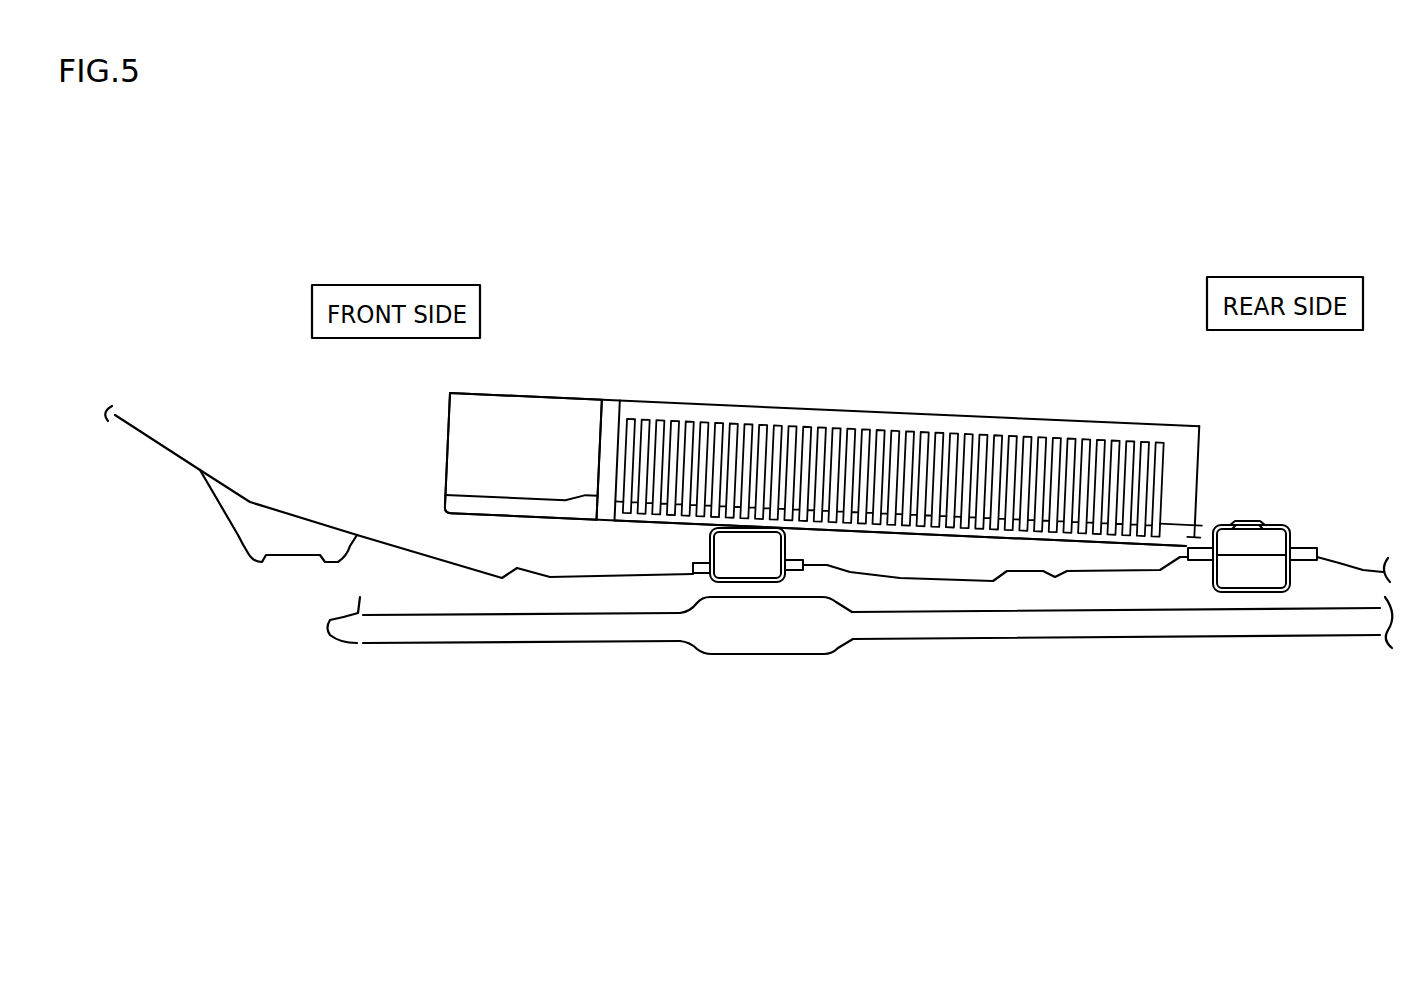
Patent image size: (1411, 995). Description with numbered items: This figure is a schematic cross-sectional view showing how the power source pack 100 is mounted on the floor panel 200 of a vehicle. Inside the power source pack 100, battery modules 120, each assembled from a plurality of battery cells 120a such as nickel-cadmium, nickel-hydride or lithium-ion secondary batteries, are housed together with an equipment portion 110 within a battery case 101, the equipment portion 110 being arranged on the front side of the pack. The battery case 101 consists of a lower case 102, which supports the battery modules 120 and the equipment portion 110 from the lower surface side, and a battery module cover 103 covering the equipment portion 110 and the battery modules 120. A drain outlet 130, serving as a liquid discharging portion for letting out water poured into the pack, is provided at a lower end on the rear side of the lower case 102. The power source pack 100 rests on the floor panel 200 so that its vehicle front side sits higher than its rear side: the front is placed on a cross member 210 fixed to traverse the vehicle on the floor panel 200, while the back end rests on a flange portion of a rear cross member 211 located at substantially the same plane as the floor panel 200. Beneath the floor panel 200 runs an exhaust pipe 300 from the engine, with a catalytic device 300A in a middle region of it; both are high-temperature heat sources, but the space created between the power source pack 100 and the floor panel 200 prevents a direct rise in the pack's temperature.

The power source pack 100 is at (631, 362).
The battery case 101 is at (727, 405).
The lower case 102 is at (937, 536).
The battery module cover 103 is at (895, 410).
The equipment portion 110 is at (528, 428).
The battery module 120 is at (1035, 445).
The battery cell 120a is at (952, 450).
The drain outlet 130 is at (1228, 538).
The floor panel 200 is at (163, 442).
The cross member 210 is at (787, 550).
The cross member 211 is at (1278, 525).
The exhaust pipe 300 is at (1003, 638).
The catalytic device 300A is at (760, 655).